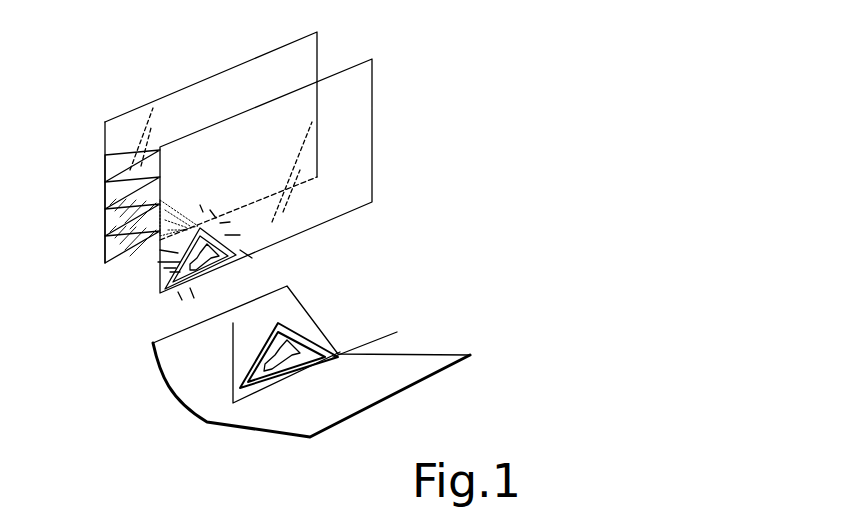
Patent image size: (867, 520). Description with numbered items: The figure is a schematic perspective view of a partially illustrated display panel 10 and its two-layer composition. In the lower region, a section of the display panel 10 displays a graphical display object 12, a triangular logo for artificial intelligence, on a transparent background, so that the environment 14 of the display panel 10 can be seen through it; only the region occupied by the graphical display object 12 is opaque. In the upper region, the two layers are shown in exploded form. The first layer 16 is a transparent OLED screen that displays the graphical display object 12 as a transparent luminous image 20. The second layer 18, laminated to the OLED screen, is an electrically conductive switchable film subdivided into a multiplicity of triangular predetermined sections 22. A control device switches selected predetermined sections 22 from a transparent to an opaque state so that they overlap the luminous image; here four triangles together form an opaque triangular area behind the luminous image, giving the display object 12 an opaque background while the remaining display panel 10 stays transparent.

The display panel 10 is at (352, 278).
The graphical display object 12 is at (308, 343).
The environment 14 is at (222, 382).
The first layer 16 is at (362, 185).
The second layer 18 is at (305, 53).
The transparent luminous image 20 is at (162, 278).
The predetermined sections 22 is at (135, 150).